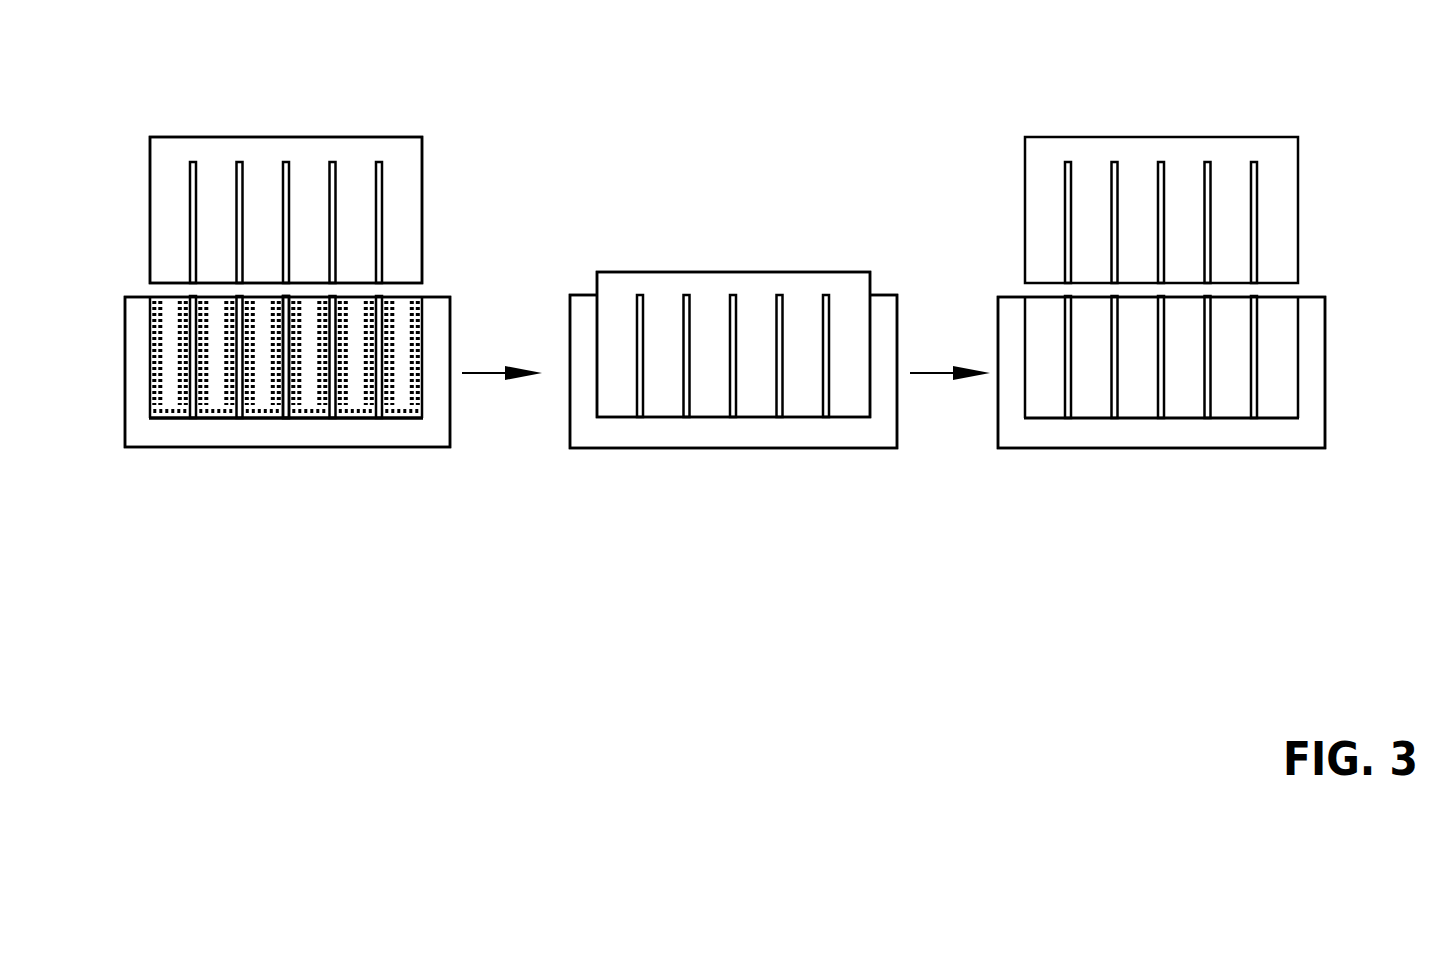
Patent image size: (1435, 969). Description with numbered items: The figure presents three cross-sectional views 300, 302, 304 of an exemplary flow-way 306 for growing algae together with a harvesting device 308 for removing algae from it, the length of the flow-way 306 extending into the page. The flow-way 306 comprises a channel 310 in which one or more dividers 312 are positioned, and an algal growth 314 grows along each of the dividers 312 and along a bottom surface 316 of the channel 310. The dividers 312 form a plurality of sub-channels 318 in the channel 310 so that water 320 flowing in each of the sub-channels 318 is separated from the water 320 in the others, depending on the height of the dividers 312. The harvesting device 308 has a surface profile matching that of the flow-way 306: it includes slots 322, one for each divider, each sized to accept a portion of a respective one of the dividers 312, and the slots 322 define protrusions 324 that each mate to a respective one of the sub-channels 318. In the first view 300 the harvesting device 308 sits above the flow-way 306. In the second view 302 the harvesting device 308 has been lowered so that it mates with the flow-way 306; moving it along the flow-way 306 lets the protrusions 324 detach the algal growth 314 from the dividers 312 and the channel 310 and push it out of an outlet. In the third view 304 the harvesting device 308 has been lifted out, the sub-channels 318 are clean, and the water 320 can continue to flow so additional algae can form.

The first cross-sectional view 300 is at (427, 67).
The second cross-sectional view 302 is at (876, 66).
The third view 304 is at (1326, 69).
The flow-way 306 is at (426, 476).
The harvesting device 308 is at (407, 207).
The channel 310 is at (435, 338).
The dividers 312 is at (285, 418).
The algal growth 314 is at (403, 418).
The bottom surface 316 is at (212, 430).
The sub-channels 318 is at (1264, 410).
The water 320 is at (1042, 385).
The slots 322 is at (378, 162).
The protrusions 324 is at (1265, 150).